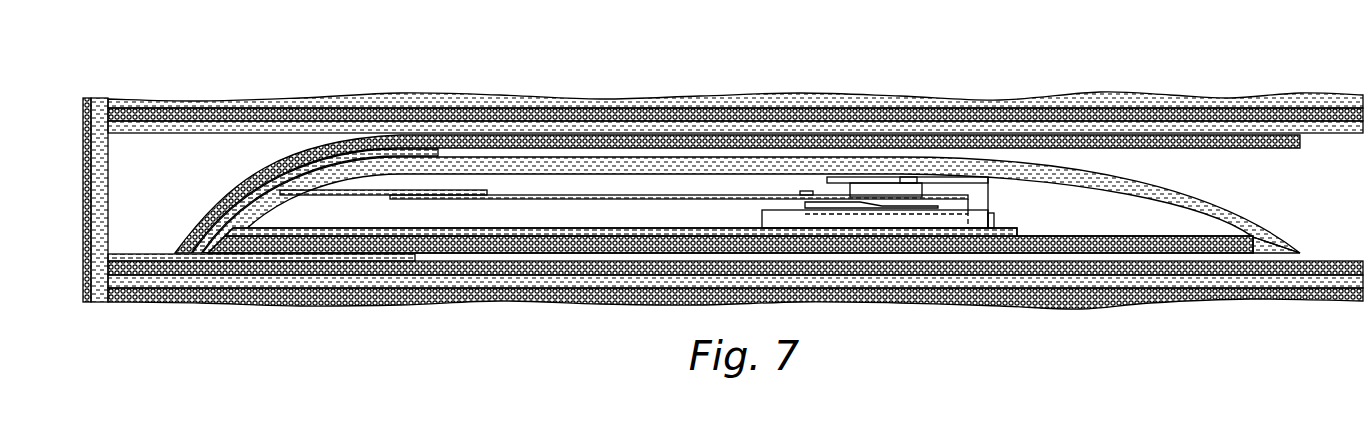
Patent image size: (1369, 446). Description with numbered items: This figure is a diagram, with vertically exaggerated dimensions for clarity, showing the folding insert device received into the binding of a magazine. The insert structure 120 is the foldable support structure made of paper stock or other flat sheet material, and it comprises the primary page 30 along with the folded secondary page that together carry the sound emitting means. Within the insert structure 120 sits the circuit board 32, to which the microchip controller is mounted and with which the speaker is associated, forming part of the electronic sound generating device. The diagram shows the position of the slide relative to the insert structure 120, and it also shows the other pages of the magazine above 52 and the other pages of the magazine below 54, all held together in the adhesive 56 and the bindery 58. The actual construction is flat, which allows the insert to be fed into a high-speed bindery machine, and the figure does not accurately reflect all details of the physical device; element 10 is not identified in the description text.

The curved stiffening layer 10 is at (1203, 197).
The primary page 30 is at (241, 193).
The circuit board 32 is at (988, 213).
The pages of the magazine above 52 is at (1125, 104).
The pages of the magazine below 54 is at (1037, 268).
The adhesive 56 is at (107, 303).
The bindery 58 is at (85, 97).
The foldable support structure 120 is at (723, 203).